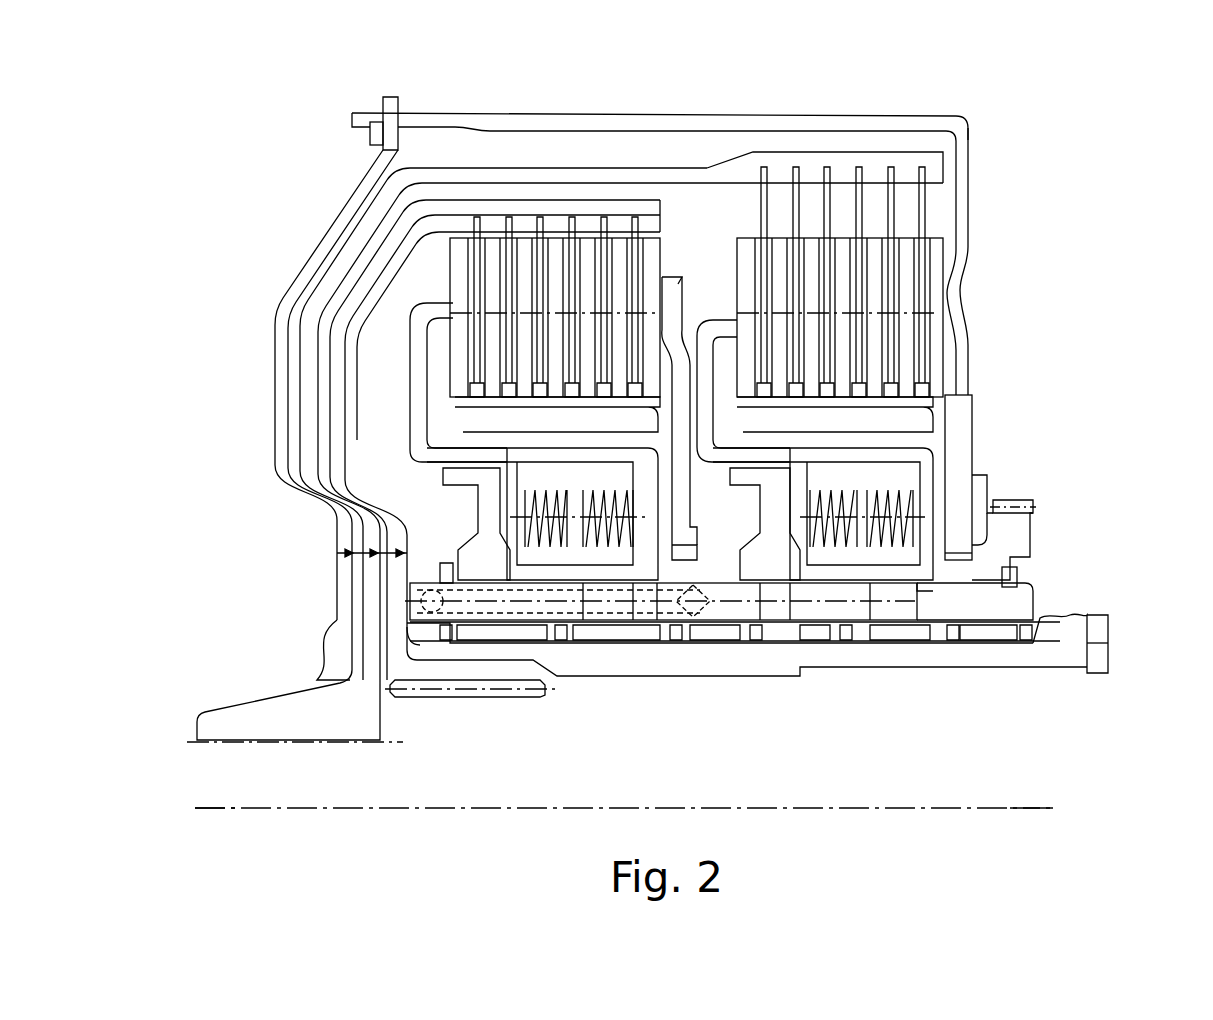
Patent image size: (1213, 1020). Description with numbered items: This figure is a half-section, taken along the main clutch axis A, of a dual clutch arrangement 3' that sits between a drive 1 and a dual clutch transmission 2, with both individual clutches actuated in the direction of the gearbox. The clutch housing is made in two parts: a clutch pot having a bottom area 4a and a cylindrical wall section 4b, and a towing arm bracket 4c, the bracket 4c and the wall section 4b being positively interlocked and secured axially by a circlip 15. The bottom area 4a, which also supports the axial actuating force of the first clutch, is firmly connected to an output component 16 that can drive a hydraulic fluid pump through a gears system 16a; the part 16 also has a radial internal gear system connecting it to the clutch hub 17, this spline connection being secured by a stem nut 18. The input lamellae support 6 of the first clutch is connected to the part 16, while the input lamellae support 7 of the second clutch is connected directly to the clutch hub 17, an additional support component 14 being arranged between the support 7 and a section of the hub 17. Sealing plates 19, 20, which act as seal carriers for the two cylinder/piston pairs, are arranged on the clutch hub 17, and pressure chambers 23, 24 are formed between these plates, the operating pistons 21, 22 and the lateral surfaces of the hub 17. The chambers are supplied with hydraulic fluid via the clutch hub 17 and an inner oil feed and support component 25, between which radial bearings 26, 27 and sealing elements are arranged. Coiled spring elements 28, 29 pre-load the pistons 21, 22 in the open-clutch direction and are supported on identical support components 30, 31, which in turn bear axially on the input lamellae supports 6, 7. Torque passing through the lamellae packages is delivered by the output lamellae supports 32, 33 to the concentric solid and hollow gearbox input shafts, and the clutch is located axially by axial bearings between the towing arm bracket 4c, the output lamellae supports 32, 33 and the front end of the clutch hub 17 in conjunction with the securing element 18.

The drive 1 is at (195, 810).
The dual clutch transmission 2 is at (1075, 809).
The dual clutch arrangement 3' is at (1057, 98).
The bottom area 4a is at (965, 185).
The cylindrical wall section 4b is at (570, 114).
The towing arm bracket 4c is at (280, 300).
The input lamellae support 6 is at (955, 465).
The input lamellae support 7 is at (430, 430).
The additional support component 14 is at (672, 290).
The circlip 15 is at (372, 135).
The output component 16 is at (1030, 525).
The gears system 16a is at (1020, 500).
The clutch hub 17 is at (1025, 600).
The stem nut 18 is at (1020, 575).
The sealing plate 19 is at (740, 630).
The sealing plate 20 is at (450, 555).
The operating piston 21 is at (820, 560).
The operating piston 22 is at (415, 380).
The pressure chamber 23 is at (780, 565).
The pressure chamber 24 is at (485, 560).
The inner oil feed and support component 25 is at (1100, 660).
The radial bearing 26 is at (990, 630).
The radial bearing 27 is at (530, 625).
The spring element 28 is at (900, 540).
The spring element 29 is at (620, 540).
The support component 30 is at (905, 435).
The support component 31 is at (370, 553).
The output lamellae support 32 is at (543, 170).
The output lamellae support 33 is at (368, 275).
The main axis A is at (1050, 808).